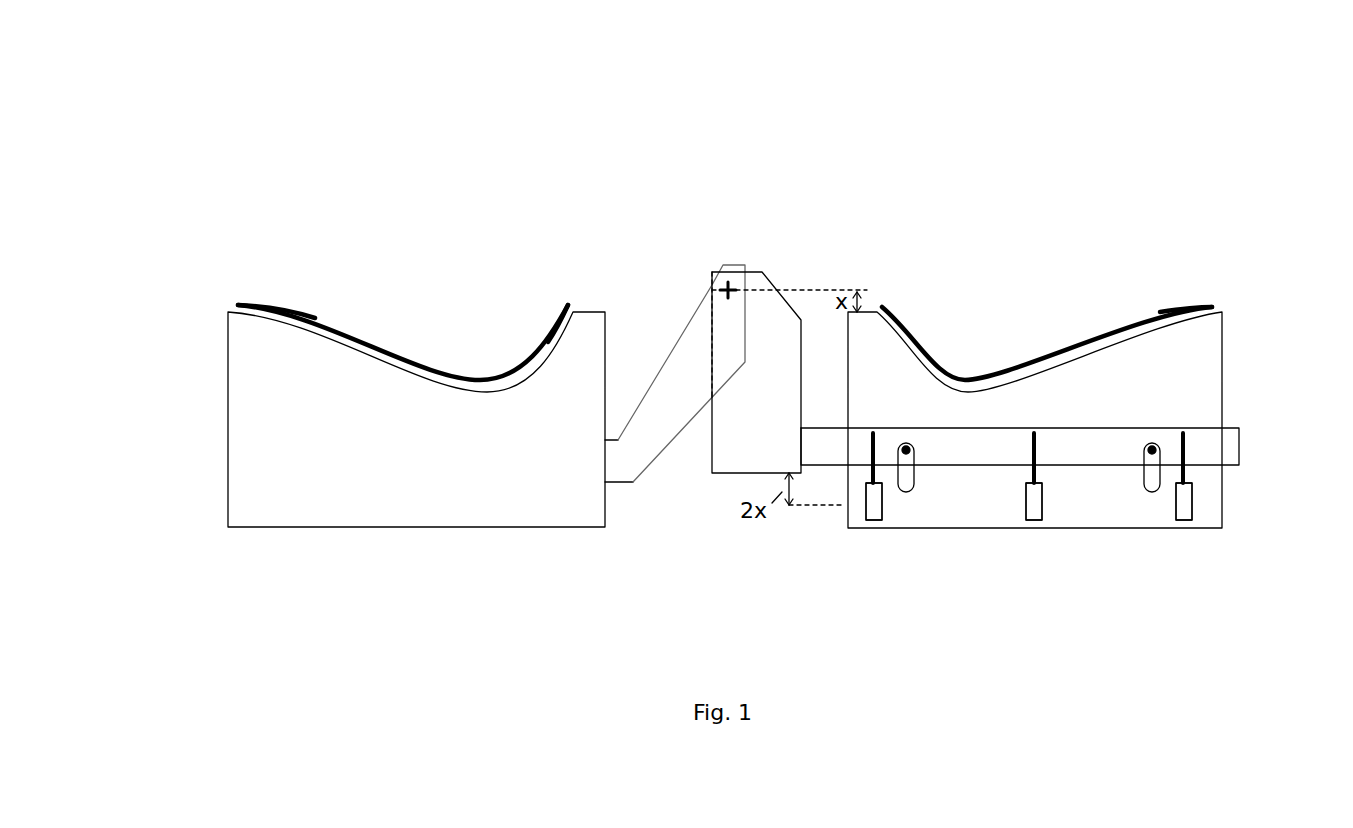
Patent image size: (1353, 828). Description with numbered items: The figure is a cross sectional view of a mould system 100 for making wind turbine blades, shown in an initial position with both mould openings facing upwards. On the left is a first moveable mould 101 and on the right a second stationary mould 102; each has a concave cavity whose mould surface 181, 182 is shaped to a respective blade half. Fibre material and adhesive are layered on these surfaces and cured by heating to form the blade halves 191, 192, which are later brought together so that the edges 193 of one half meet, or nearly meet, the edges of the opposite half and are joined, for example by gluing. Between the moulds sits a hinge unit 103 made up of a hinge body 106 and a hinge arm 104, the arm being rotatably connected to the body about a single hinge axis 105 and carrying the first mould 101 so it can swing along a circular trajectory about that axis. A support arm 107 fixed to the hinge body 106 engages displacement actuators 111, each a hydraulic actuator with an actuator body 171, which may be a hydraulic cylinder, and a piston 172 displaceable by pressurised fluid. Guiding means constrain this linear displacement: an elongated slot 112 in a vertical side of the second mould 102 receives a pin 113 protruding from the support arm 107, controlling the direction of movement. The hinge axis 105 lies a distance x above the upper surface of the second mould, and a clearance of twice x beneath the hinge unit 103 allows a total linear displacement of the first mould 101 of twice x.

The mould system 100 is at (747, 98).
The first moveable mould 101 is at (228, 458).
The second stationary mould 102 is at (1225, 362).
The hinge unit 103 is at (772, 260).
The hinge arm 104 is at (685, 317).
The single hinge axis 105 is at (725, 287).
The hinge body 106 is at (747, 450).
The support arm 107 is at (1242, 438).
The displacement actuators 111 is at (887, 507).
The elongated slot 112 is at (920, 475).
The pin 113 is at (906, 446).
The actuator body 171 is at (1188, 495).
The piston 172 is at (1187, 468).
The first mould surface 181 is at (346, 345).
The second mould surface 182 is at (1118, 335).
The first blade half 191 is at (252, 293).
The second blade half 192 is at (1190, 303).
The edges of the blade half 193 is at (561, 299).